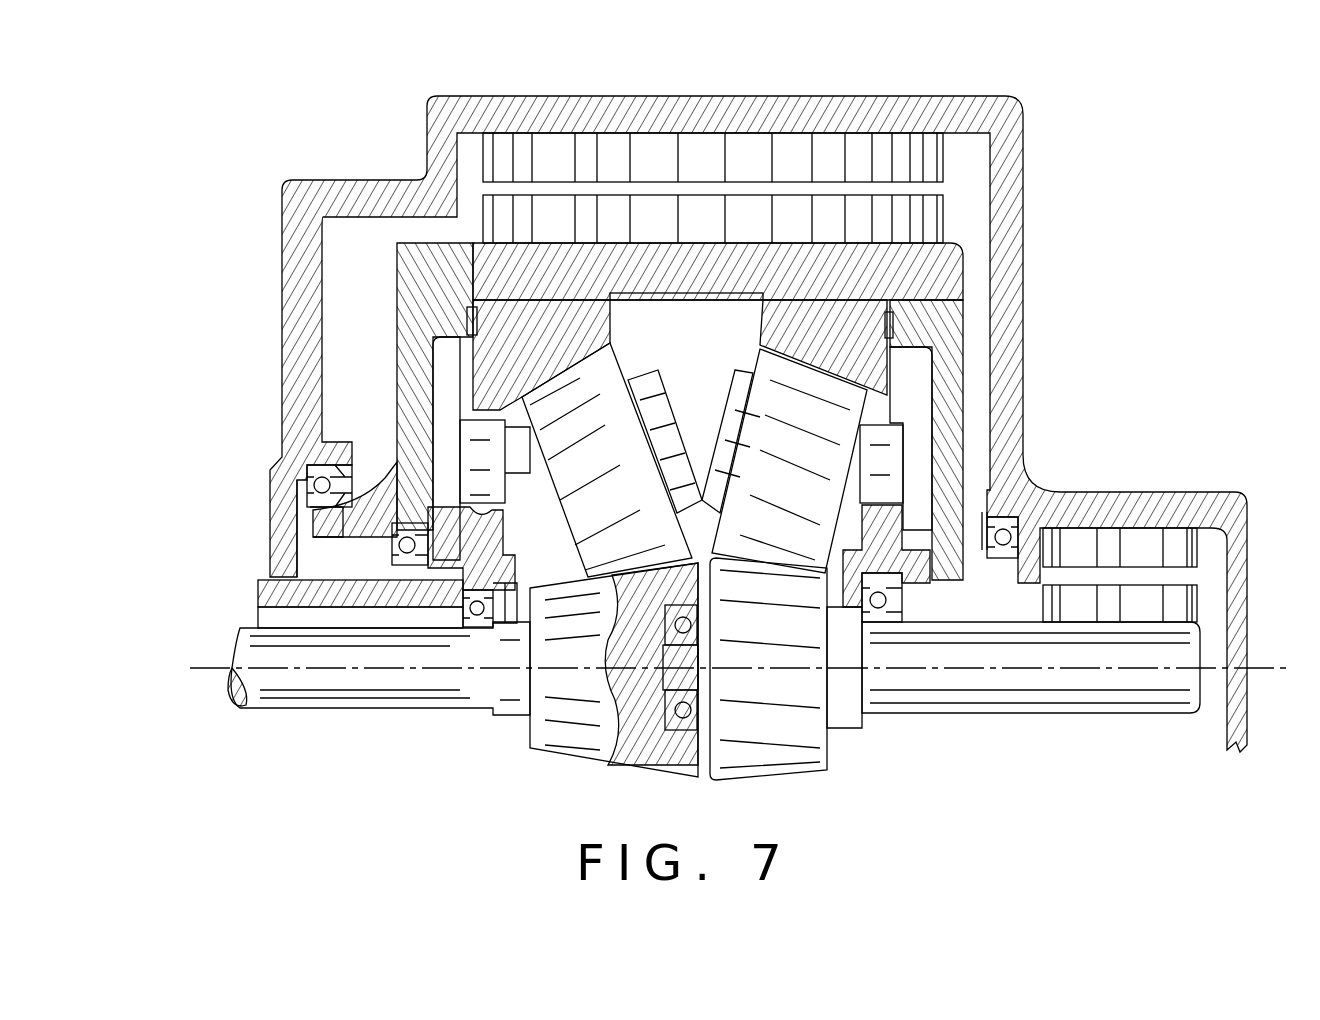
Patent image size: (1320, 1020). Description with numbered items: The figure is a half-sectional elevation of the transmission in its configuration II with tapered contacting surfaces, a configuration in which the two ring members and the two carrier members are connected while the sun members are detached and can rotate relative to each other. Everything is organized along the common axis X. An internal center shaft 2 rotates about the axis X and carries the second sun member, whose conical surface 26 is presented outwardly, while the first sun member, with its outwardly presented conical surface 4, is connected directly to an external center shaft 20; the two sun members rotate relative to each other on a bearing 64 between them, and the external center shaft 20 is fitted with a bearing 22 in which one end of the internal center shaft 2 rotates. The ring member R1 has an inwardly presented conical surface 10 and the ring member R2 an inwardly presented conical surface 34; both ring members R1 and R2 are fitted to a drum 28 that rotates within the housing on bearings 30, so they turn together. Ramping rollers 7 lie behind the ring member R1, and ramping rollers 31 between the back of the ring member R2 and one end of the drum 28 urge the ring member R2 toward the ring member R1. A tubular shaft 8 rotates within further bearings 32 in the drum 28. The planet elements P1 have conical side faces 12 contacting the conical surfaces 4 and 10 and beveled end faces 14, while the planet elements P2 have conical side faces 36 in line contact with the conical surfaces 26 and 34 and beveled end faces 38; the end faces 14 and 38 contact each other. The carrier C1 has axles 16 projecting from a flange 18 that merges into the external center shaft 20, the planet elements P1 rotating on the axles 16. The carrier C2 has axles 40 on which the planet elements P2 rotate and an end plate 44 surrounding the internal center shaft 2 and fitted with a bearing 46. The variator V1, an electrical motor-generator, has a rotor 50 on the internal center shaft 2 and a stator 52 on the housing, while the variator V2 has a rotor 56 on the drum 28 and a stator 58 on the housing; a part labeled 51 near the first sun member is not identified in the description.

The internal center shaft 2 is at (995, 698).
The conical surface 4 is at (576, 722).
The ramping rollers 7 is at (467, 320).
The tubular shaft 8 is at (278, 593).
The conical surface 10 is at (555, 478).
The conical side faces 12 is at (611, 483).
The beveled end face 14 is at (673, 395).
The axles 16 is at (523, 450).
The flange 18 is at (490, 512).
The external center shaft 20 is at (290, 700).
The bearing 22 is at (468, 625).
The conical surface 26 is at (786, 700).
The drum 28 is at (598, 258).
The bearings 30 is at (315, 460).
The ramping rollers 31 is at (893, 330).
The bearings 32 is at (383, 550).
The conical surface 34 is at (758, 380).
The conical side faces 36 is at (798, 491).
The beveled end face 38 is at (720, 397).
The axles 40 is at (940, 470).
The end plate 44 is at (890, 533).
The bearing 46 is at (892, 613).
The rotor 50 is at (1195, 598).
The hub flange 51 is at (540, 755).
The stator 52 is at (1195, 548).
The rotor 56 is at (940, 214).
The stator 58 is at (948, 150).
The bearing 64 is at (683, 733).
The carrier C1 is at (463, 430).
The carrier C2 is at (887, 443).
The planet elements P1 is at (557, 403).
The planet elements P2 is at (920, 385).
The ring member R1 is at (853, 320).
The ring member R2 is at (527, 300).
The variator V1 is at (1202, 577).
The variator V2 is at (965, 187).
The configuration II is at (1152, 238).
The axis X is at (754, 667).